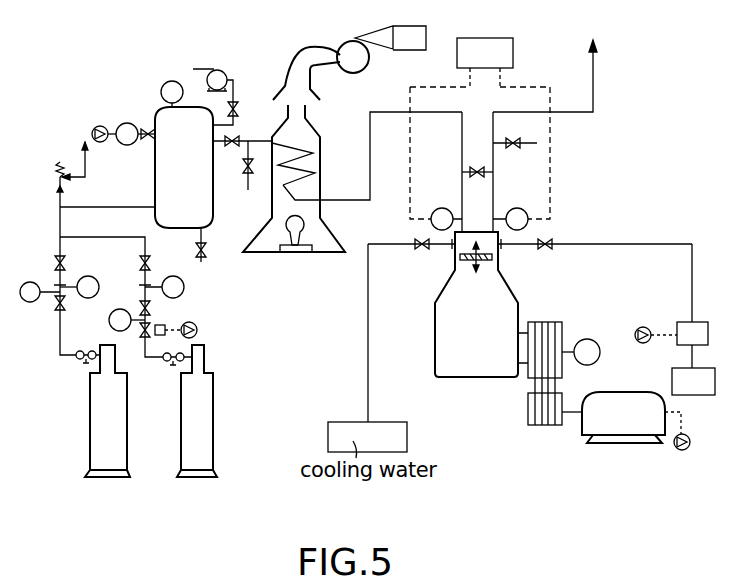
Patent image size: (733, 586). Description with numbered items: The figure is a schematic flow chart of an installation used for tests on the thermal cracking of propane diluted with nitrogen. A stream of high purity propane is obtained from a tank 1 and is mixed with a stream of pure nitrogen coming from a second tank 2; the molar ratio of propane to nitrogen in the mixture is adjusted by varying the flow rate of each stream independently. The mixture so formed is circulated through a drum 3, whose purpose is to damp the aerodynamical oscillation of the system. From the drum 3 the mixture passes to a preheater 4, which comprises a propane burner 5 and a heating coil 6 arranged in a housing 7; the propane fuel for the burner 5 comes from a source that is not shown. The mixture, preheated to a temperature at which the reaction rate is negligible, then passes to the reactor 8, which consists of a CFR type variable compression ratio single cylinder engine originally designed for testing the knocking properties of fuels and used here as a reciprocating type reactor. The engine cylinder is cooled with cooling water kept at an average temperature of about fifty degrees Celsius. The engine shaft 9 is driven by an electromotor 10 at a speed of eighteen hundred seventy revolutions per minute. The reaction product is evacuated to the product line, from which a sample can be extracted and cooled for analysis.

The tank 1 is at (203, 425).
The tank 2 is at (113, 428).
The drum 3 is at (208, 187).
The preheater 4 is at (306, 190).
The propane burner 5 is at (297, 255).
The heating coil 6 is at (320, 156).
The housing 7 is at (322, 193).
The reactor 8 is at (440, 337).
The engine shaft 9 is at (523, 366).
The electromotor 10 is at (620, 427).